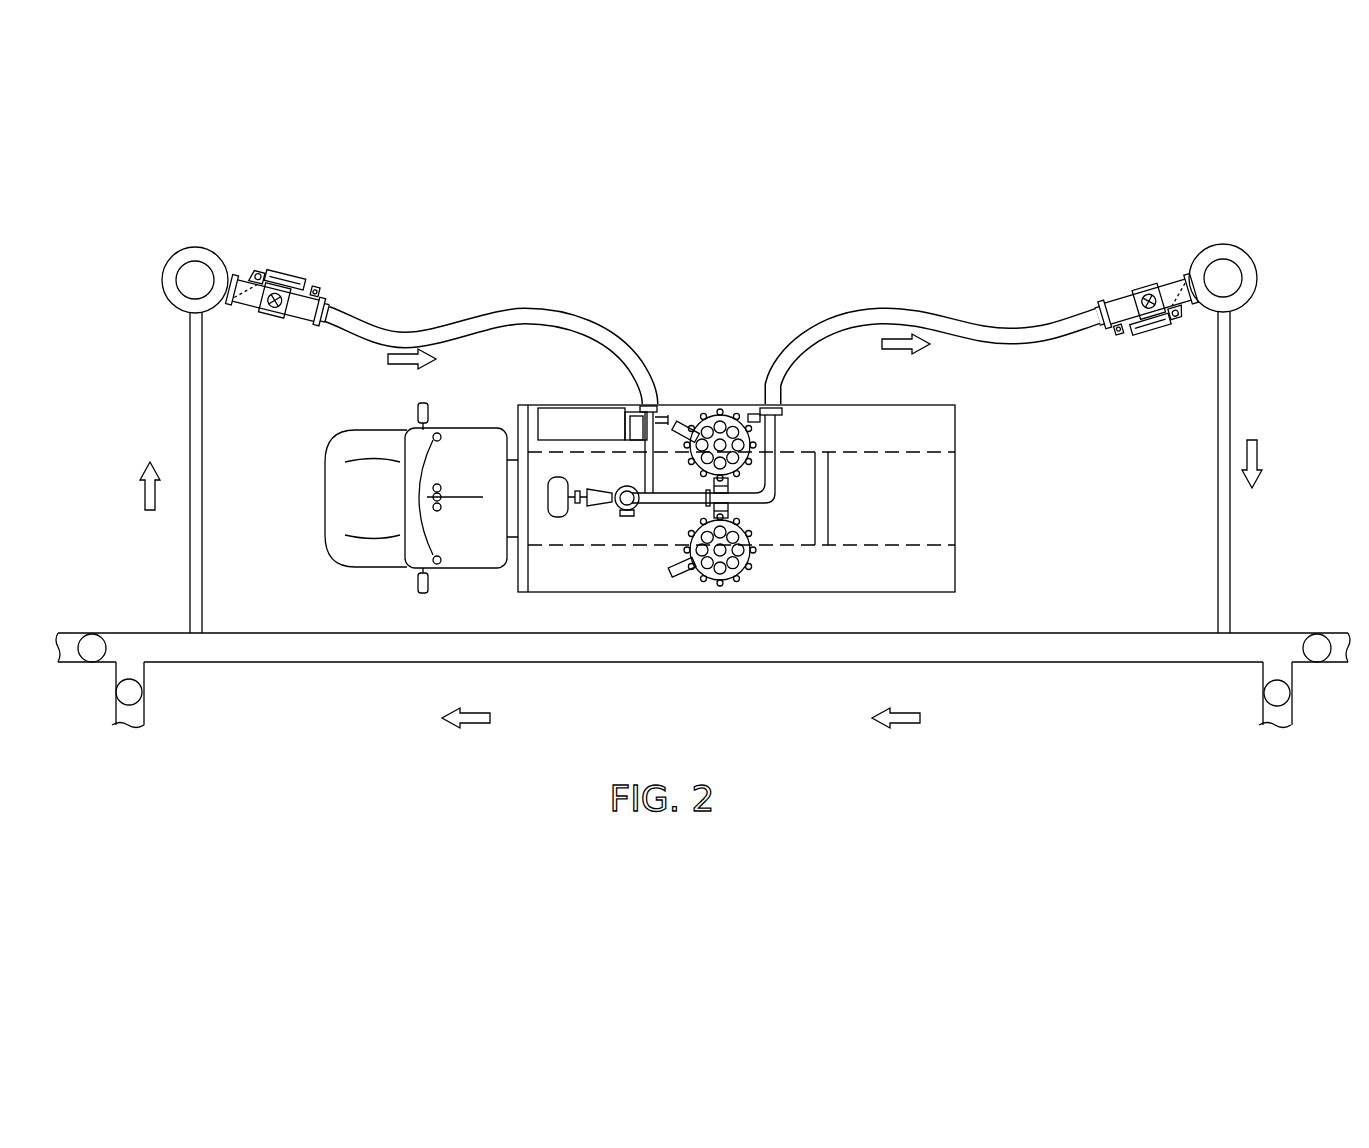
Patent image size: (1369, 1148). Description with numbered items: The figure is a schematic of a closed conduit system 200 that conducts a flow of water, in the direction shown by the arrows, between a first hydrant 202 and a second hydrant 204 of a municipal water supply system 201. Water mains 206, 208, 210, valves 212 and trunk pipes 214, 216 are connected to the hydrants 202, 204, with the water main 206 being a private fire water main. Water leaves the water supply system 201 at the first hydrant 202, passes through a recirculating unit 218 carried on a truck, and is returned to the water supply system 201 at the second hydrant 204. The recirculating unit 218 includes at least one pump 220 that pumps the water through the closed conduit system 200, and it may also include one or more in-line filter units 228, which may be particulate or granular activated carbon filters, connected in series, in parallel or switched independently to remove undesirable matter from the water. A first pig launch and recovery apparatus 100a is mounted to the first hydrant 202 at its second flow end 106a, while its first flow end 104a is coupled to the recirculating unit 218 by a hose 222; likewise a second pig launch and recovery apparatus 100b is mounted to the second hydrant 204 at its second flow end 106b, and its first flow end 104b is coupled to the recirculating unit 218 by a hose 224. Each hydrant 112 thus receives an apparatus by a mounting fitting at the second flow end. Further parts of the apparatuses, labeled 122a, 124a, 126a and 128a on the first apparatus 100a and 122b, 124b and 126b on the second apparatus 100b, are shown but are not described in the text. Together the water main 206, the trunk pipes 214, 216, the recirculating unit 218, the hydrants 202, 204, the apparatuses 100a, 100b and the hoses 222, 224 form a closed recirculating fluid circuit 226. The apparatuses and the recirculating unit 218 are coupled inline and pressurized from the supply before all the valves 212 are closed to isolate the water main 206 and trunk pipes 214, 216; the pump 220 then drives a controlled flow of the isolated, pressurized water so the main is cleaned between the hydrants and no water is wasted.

The first pig launch and recovery apparatus 100a is at (310, 268).
The second pig launch and recovery apparatus 100b is at (1108, 297).
The first flow end 104a is at (322, 326).
The first flow end 104b is at (1094, 306).
The second flow end 106a is at (231, 312).
The second flow end 106b is at (1186, 277).
The hydrant 112 is at (165, 306).
The sensor of first assembly 122a is at (318, 287).
The sensor of second assembly 122b is at (1118, 342).
The controller bracket of first assembly 124a is at (253, 268).
The controller bracket of second assembly 124b is at (1186, 320).
The actuator housing of first assembly 126a is at (296, 268).
The actuator housing of second assembly 126b is at (1148, 342).
The hose fitting 128a is at (334, 305).
The closed conduit system 200 is at (811, 293).
The water supply system 201 is at (346, 670).
The first hydrant 202 is at (186, 250).
The second hydrant 204 is at (1250, 258).
The water main 206 is at (1035, 633).
The water main 208 is at (146, 676).
The water main 210 is at (1293, 714).
The valves 212 is at (92, 634).
The trunk pipe 214 is at (204, 490).
The trunk pipe 216 is at (1231, 545).
The recirculating unit 218 is at (958, 440).
The pump 220 is at (627, 520).
The hose 222 is at (524, 307).
The hose 224 is at (893, 313).
The closed recirculating fluid circuit 226 is at (656, 665).
The in-line filter unit 228 is at (720, 406).